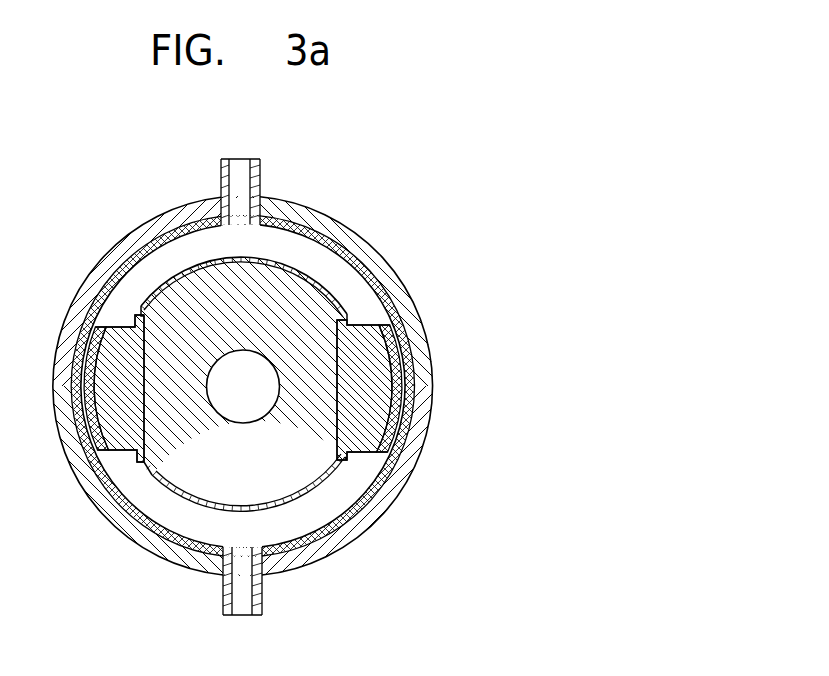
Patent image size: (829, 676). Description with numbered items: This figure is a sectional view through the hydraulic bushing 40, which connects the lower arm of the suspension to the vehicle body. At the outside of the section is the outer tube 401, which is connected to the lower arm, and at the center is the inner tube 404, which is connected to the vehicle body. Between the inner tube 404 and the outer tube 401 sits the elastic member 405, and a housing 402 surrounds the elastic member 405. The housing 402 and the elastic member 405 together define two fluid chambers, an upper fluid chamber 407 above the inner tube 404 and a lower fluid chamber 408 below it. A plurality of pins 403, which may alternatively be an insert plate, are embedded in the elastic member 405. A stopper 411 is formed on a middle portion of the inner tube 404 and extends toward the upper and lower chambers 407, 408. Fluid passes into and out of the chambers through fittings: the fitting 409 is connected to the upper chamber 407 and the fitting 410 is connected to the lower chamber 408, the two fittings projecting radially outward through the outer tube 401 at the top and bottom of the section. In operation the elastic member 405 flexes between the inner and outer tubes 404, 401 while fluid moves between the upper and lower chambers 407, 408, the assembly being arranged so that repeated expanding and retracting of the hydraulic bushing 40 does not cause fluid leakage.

The hydraulic bushing 40 is at (373, 185).
The outer tube 401 is at (406, 292).
The housing 402 is at (395, 316).
The pins 403 is at (407, 367).
The inner tube 404 is at (362, 460).
The elastic member 405 is at (373, 413).
The upper fluid chamber 407 is at (333, 268).
The lower fluid chamber 408 is at (335, 515).
The fitting 409 is at (261, 169).
The fitting 410 is at (263, 601).
The stopper 411 is at (194, 257).